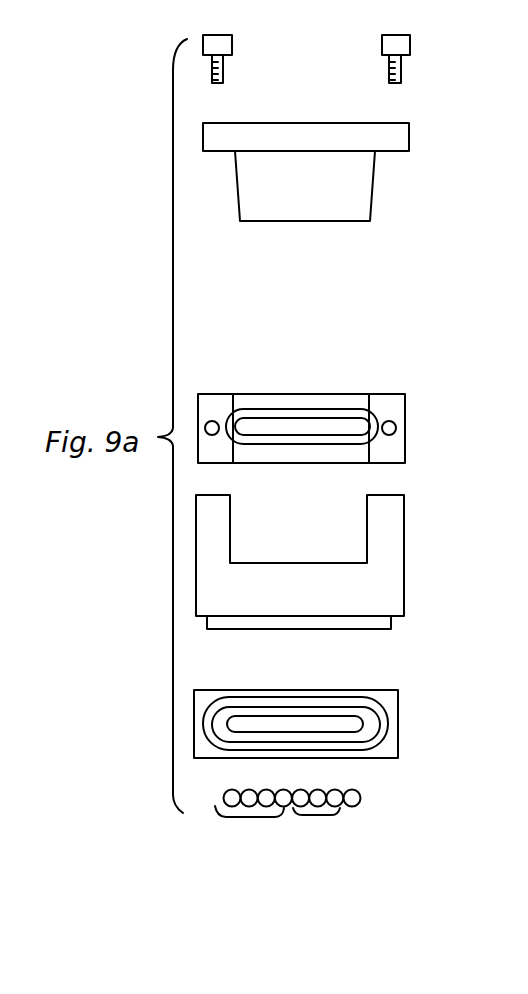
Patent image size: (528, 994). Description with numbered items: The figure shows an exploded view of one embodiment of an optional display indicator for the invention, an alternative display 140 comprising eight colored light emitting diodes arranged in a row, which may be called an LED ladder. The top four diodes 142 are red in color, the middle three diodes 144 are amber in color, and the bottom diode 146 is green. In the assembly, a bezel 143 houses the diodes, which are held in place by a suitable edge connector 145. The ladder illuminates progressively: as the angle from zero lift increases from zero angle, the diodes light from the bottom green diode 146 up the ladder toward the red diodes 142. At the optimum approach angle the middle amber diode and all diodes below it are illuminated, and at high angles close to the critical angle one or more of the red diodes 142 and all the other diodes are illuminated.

The alternative display 140 is at (290, 822).
The top four diodes 142 is at (229, 822).
The bezel 143 is at (405, 620).
The middle three diodes 144 is at (328, 826).
The edge connector 145 is at (376, 192).
The bottom diode 146 is at (357, 803).